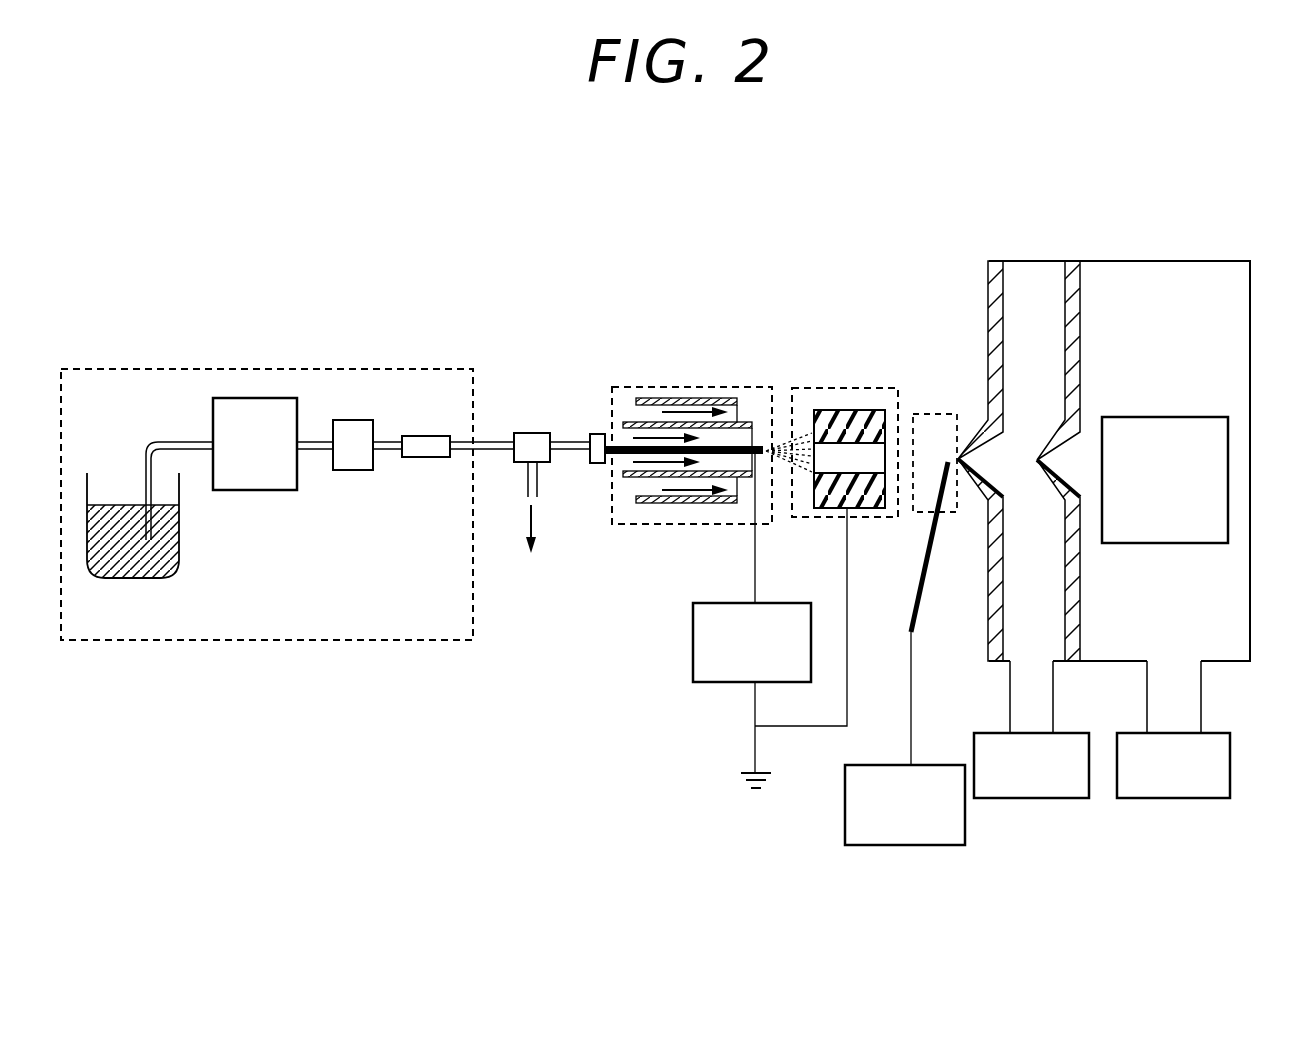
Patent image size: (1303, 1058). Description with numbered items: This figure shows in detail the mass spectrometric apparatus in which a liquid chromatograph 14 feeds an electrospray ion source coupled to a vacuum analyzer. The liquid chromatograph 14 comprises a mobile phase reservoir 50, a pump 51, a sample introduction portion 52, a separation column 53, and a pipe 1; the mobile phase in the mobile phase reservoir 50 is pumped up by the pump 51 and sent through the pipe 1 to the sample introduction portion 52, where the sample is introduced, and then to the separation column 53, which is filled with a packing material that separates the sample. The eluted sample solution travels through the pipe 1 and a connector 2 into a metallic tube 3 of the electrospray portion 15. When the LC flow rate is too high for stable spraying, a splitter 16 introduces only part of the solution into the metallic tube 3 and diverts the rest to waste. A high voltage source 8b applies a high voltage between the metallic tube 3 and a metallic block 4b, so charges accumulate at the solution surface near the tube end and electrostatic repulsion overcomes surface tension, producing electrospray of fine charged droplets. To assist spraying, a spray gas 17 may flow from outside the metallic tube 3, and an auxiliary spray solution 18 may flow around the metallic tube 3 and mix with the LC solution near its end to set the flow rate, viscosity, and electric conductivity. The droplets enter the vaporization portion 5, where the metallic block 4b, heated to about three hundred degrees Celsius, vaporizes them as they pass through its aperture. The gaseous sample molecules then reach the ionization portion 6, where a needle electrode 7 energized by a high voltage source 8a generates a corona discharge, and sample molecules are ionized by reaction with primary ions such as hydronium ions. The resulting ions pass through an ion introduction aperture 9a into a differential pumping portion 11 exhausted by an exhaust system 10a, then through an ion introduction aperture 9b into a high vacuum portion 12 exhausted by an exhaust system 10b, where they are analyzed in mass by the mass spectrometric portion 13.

The pipe 1 is at (165, 440).
The connector 2 is at (590, 432).
The metallic tube 3 is at (612, 452).
The metallic block 4b is at (822, 418).
The vaporization portion 5 is at (875, 396).
The ionization portion 6 is at (935, 430).
The needle electrode 7 is at (916, 590).
The high voltage source 8a is at (906, 845).
The high voltage source 8b is at (695, 665).
The ion introduction aperture 9a is at (958, 452).
The ion introduction aperture 9b is at (1028, 458).
The exhaust system 10a is at (1034, 798).
The exhaust system 10b is at (1178, 798).
The differential pumping portion 11 is at (1018, 273).
The high vacuum portion 12 is at (1158, 277).
The mass spectrometric portion 13 is at (1222, 493).
The liquid chromatograph 14 is at (82, 380).
The electrospray portion 15 is at (624, 393).
The splitter 16 is at (532, 440).
The spray gas 17 is at (700, 398).
The auxiliary spray solution 18 is at (650, 423).
The mobile phase reservoir 50 is at (128, 580).
The pump 51 is at (247, 410).
The sample introduction portion 52 is at (357, 462).
The separation column 53 is at (430, 455).